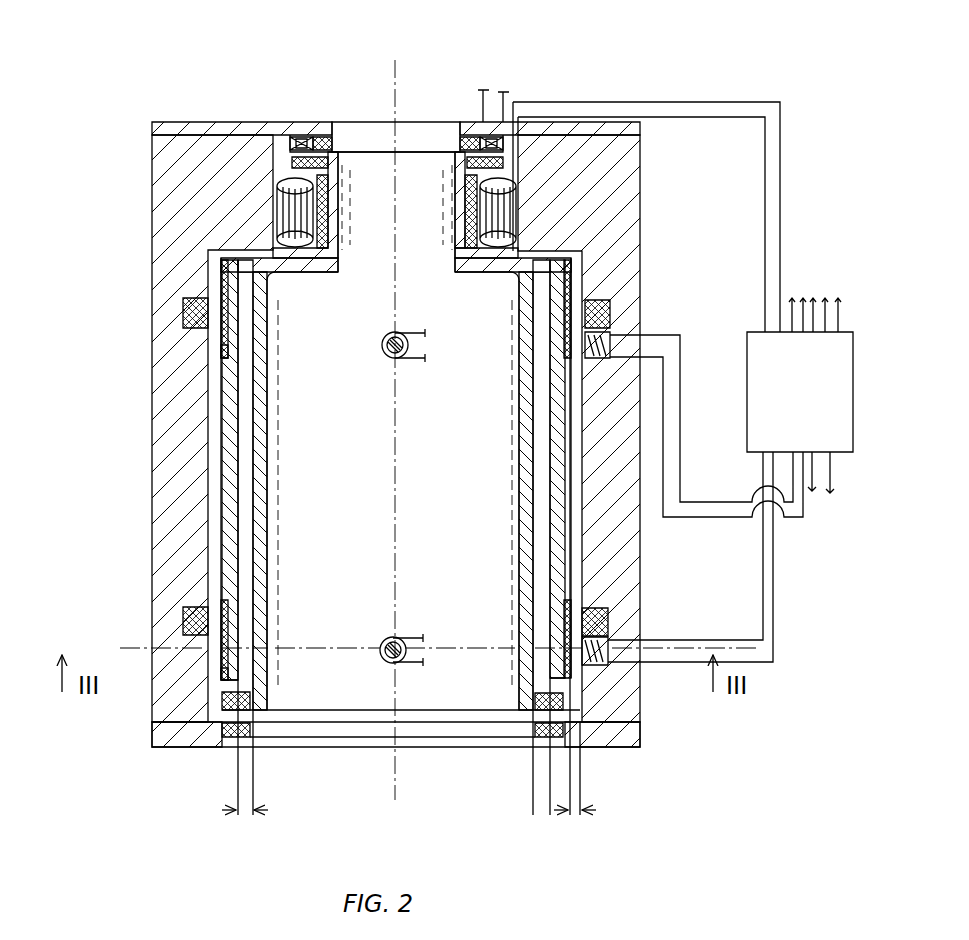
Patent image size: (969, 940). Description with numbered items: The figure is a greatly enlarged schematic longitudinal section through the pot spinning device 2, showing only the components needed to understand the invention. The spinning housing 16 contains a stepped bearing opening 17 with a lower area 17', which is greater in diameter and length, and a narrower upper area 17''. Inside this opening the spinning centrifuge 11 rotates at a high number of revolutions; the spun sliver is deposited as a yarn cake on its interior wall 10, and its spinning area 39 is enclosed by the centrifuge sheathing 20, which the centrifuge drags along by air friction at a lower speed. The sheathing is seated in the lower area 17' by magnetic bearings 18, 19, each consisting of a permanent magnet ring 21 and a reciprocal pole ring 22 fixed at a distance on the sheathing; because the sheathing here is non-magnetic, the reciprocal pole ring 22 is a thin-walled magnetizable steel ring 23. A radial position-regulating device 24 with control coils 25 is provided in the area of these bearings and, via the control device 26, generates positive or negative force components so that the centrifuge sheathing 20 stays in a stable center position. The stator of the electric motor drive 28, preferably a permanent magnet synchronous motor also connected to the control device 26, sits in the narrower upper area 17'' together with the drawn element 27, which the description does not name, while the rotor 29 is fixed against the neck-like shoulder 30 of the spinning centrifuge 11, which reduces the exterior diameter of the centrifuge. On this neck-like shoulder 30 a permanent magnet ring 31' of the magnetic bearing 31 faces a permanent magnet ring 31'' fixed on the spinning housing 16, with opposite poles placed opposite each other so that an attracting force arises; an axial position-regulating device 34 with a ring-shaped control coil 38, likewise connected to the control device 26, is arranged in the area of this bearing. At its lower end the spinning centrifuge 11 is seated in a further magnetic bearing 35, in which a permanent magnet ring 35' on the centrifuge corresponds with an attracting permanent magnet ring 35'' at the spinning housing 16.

The pot spinning device 2 is at (219, 790).
The interior wall 10 is at (270, 506).
The spinning centrifuge 11 is at (262, 484).
The spinning housing 16 is at (622, 180).
The stepped bearing opening 17 is at (401, 745).
The lower area of the bearing opening 17' is at (393, 430).
The upper area of the bearing opening 17'' is at (396, 212).
The magnetic bearing 18 is at (160, 321).
The magnetic bearing 19 is at (161, 622).
The centrifuge sheathing 20 is at (230, 545).
The permanent magnet ring 21 is at (224, 322).
The reciprocal pole ring 22 is at (213, 292).
The magnetizable steel ring 23 is at (229, 349).
The radial position-regulating device 24 is at (616, 338).
The control coil 25 is at (391, 358).
The control device 26 is at (813, 398).
The coil 27 is at (470, 200).
The electric motor drive 28 is at (473, 265).
The rotor 29 is at (462, 244).
The neck-like shoulder 30 is at (333, 211).
The magnetic bearing 31 is at (396, 84).
The permanent magnet ring 31' is at (270, 114).
The permanent magnet ring 31'' is at (465, 102).
The axial position-regulating device 34 is at (521, 82).
The magnetic bearing 35 is at (409, 556).
The permanent magnet ring 35' is at (212, 737).
The permanent magnet ring 35'' is at (552, 744).
The ring-shaped control coil 38 is at (493, 122).
The spinning area 39 is at (462, 640).